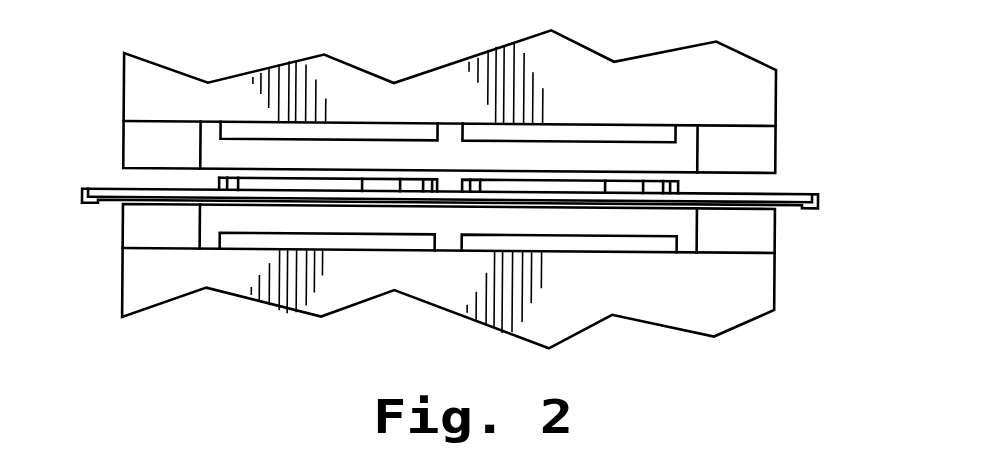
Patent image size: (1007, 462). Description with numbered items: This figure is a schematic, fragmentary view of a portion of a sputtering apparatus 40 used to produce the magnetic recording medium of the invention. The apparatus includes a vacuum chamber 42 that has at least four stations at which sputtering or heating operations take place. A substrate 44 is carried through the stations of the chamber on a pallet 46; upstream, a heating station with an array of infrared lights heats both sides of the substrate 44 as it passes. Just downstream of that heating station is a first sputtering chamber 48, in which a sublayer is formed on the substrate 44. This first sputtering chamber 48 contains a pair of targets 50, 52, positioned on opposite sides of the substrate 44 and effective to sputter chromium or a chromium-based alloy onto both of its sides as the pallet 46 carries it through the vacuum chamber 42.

The sputtering apparatus 40 is at (777, 87).
The vacuum chamber 42 is at (777, 178).
The substrate 44 is at (508, 185).
The pallet 46 is at (107, 188).
The first sputtering chamber 48 is at (362, 119).
The target 50 is at (603, 241).
The target 52 is at (576, 130).